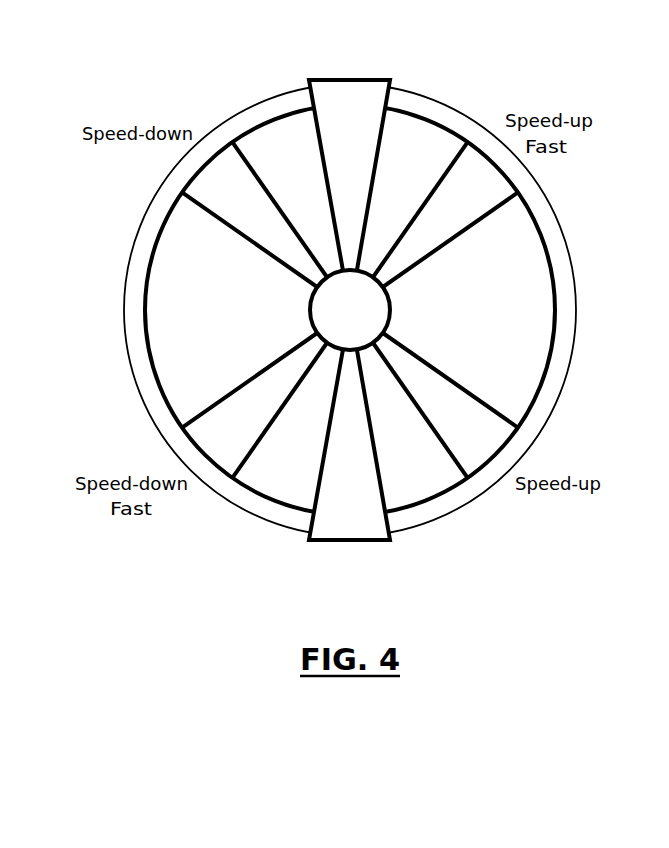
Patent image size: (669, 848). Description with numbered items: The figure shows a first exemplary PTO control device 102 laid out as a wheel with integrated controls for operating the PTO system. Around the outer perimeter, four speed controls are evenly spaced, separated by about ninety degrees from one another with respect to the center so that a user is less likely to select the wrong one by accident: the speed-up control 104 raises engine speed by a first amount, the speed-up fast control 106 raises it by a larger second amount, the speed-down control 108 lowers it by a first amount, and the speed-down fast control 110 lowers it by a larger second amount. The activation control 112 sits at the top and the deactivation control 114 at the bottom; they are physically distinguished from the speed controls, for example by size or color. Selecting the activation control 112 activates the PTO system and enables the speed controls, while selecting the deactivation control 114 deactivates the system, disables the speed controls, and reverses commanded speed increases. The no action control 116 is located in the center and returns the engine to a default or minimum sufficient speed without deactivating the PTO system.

The PTO control device 102 is at (424, 88).
The speed-up control 104 is at (494, 410).
The speed-up fast control 106 is at (498, 208).
The speed-down control 108 is at (222, 212).
The speed-down fast control 110 is at (225, 397).
The activation control 112 is at (340, 80).
The deactivation control 114 is at (343, 540).
The no action control 116 is at (309, 308).